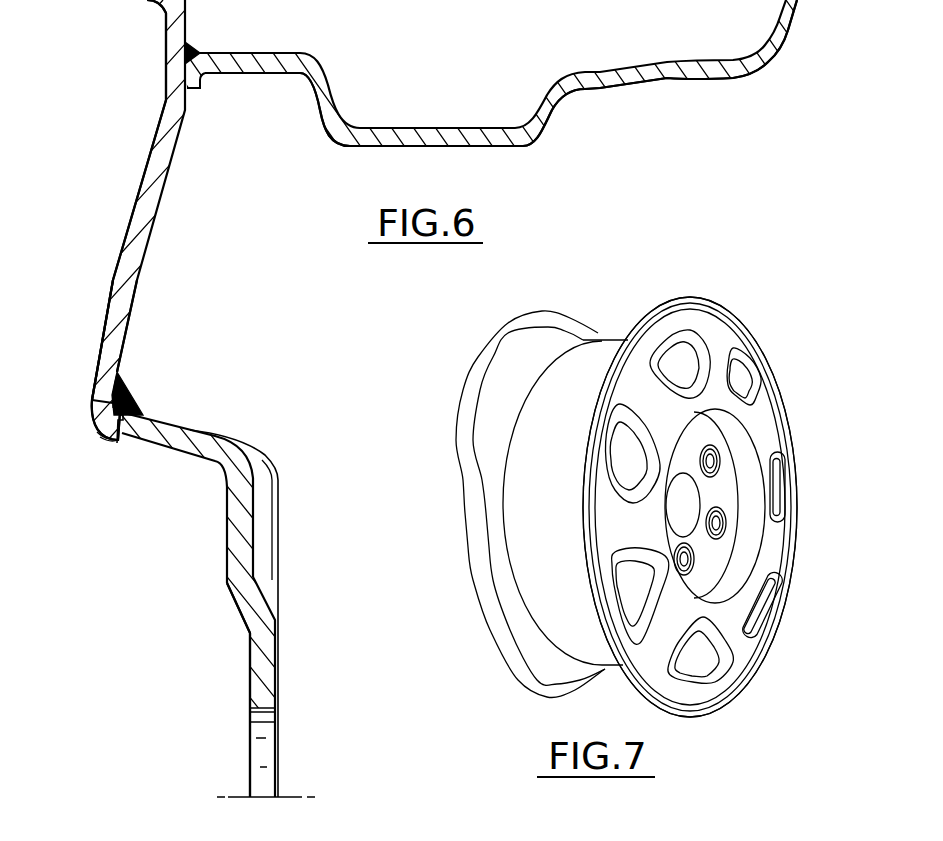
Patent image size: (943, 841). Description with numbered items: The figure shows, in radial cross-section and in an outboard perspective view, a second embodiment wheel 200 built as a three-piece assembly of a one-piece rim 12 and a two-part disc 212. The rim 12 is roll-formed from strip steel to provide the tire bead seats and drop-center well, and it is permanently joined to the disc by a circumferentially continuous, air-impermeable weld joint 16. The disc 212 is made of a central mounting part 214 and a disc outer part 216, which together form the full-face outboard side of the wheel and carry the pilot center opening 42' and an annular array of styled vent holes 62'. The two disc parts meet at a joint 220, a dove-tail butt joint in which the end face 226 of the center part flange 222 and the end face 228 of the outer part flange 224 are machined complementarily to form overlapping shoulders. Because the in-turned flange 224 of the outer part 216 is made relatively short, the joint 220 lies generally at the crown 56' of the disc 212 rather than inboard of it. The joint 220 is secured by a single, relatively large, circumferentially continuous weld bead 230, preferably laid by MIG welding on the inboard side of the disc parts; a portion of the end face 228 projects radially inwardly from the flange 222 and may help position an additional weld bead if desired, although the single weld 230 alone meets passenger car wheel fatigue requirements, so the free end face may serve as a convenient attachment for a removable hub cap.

In FIG. 6, the rim part 12 is at (631, 59).
In FIG. 7, the rim part 12 is at (603, 327).
In FIG. 6, the weld joint 16 is at (207, 42).
In FIG. 6, the wheel 200 is at (512, 56).
In FIG. 7, the wheel 200 is at (810, 327).
In FIG. 6, the two-part disc 212 is at (140, 170).
In FIG. 6, the central mounting part 214 is at (226, 553).
In FIG. 7, the central mounting part 214 is at (731, 552).
In FIG. 6, the disc outer part 216 is at (109, 305).
In FIG. 7, the disc outer part 216 is at (769, 433).
In FIG. 6, the joint 220 is at (143, 390).
In FIG. 6, the center part flange 222 is at (180, 432).
In FIG. 7, the center part flange 222 is at (732, 580).
In FIG. 6, the in-turned flange 224 is at (113, 440).
In FIG. 6, the end face of center part flange 226 is at (113, 403).
In FIG. 6, the end face of outer part flange 228 is at (125, 438).
In FIG. 7, the end face of outer part flange 228 is at (762, 532).
In FIG. 6, the weld bead 230 is at (120, 378).
In FIG. 7, the pilot center opening 42' is at (753, 493).
In FIG. 6, the crown 56' is at (74, 442).
In FIG. 7, the styled vent hole 62' is at (718, 507).